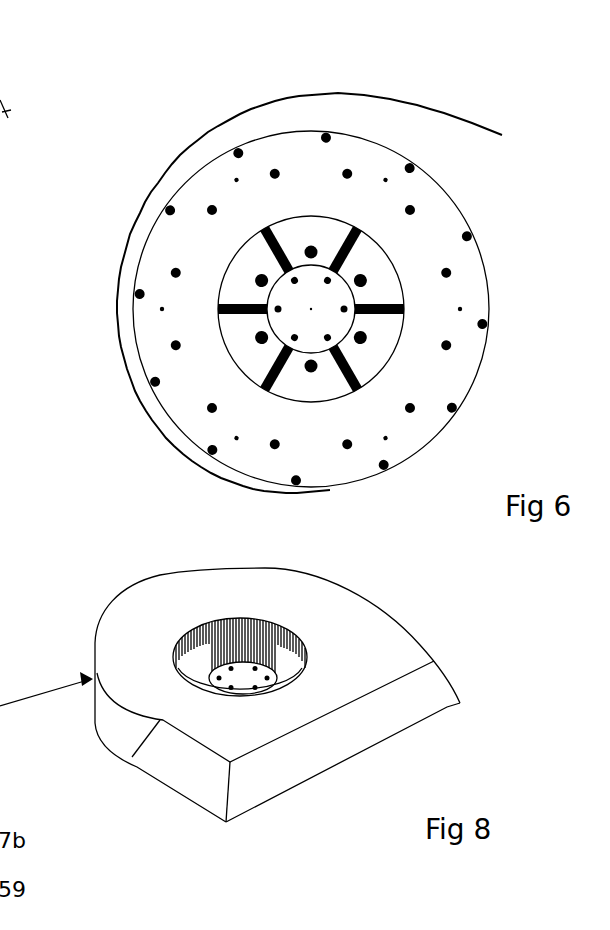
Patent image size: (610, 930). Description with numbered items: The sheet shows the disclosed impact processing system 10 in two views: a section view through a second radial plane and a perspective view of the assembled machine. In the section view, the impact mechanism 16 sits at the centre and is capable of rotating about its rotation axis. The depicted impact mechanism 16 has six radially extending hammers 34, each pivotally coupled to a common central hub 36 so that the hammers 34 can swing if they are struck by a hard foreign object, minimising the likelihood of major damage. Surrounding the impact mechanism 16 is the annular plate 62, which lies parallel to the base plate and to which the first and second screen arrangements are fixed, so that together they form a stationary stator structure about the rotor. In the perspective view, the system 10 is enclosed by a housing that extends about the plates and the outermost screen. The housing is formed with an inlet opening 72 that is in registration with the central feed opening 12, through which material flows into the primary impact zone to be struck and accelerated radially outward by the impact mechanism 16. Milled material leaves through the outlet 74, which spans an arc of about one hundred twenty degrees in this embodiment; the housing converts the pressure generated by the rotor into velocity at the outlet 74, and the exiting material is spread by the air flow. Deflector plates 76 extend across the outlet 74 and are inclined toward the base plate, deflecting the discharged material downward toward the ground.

In FIG. 8, the impact processing system 10 is at (444, 585).
In FIG. 8, the central feed opening 12 is at (236, 617).
In FIG. 6, the impact mechanism 16 is at (283, 268).
In FIG. 8, the impact mechanism 16 is at (282, 622).
In FIG. 6, the hammers 34 is at (280, 237).
In FIG. 6, the central hub 36 is at (313, 300).
In FIG. 6, the annular plate 62 is at (430, 428).
In FIG. 8, the inlet opening 72 is at (199, 621).
In FIG. 8, the outlet 74 is at (278, 805).
In FIG. 8, the deflector plates 76 is at (180, 763).